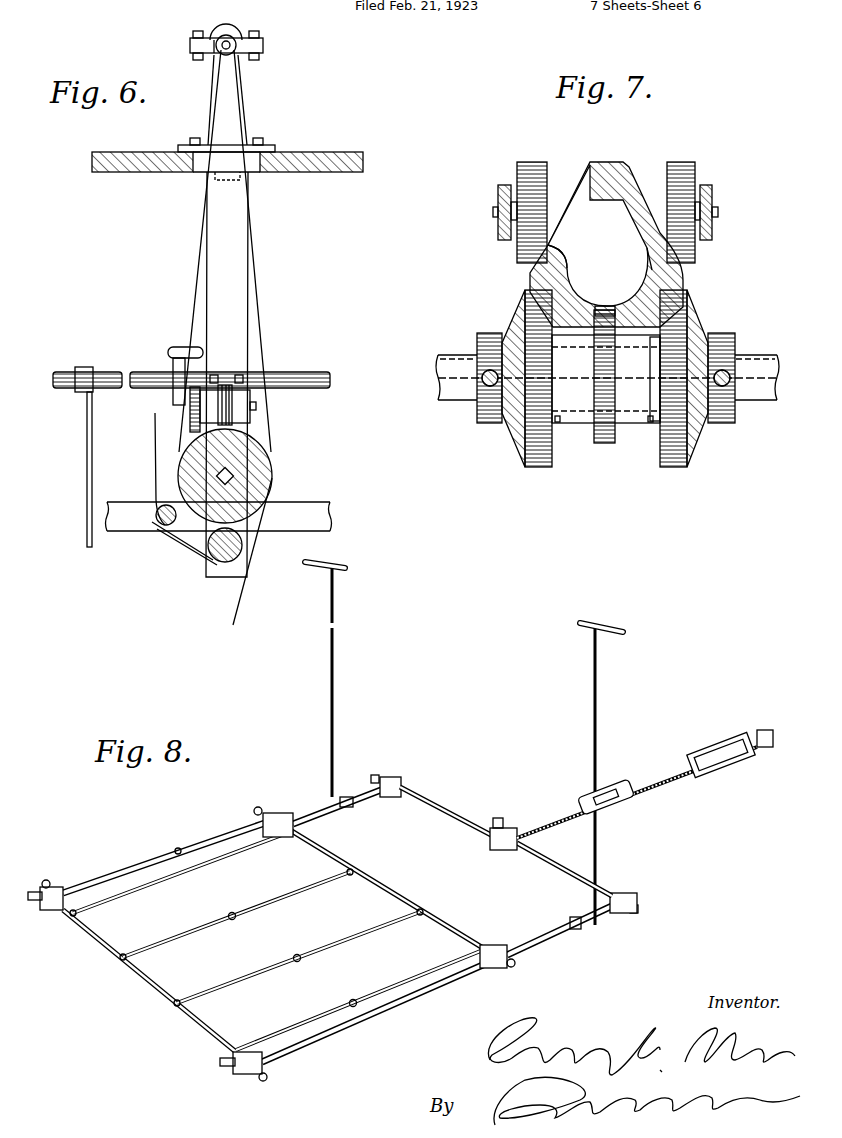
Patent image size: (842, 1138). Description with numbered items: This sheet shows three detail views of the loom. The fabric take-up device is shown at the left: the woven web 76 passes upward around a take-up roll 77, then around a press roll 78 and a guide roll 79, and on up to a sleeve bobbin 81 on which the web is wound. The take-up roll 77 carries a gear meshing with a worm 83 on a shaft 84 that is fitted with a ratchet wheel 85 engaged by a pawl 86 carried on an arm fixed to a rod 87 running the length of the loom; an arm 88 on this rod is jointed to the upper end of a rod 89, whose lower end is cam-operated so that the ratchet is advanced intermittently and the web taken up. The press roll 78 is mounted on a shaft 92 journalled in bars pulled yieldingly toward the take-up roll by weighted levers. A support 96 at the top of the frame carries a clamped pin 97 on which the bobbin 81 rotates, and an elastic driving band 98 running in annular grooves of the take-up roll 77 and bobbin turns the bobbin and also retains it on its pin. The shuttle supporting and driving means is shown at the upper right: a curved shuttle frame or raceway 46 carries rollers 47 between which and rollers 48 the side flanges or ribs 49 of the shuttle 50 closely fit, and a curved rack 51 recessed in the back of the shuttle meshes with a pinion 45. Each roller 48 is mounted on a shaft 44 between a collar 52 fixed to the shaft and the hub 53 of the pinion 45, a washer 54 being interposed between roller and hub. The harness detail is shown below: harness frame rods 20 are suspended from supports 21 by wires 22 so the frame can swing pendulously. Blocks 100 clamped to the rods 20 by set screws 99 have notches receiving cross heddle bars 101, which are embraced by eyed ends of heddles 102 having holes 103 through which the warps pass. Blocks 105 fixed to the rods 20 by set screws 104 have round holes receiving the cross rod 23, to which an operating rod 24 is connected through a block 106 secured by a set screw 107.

In FIG. 8, the harness frame rod 20 is at (185, 850).
In FIG. 8, the support 21 is at (346, 567).
In FIG. 8, the wire 22 is at (334, 676).
In FIG. 8, the cross rod 23 is at (557, 860).
In FIG. 8, the operating rod 24 is at (662, 777).
In FIG. 7, the shaft 44 is at (450, 368).
In FIG. 7, the pinion 45 is at (605, 440).
In FIG. 7, the shuttle frame or raceway 46 is at (498, 228).
In FIG. 7, the roller 47 is at (527, 165).
In FIG. 7, the roller 48 is at (520, 320).
In FIG. 7, the side flange or rib 49 is at (540, 274).
In FIG. 7, the shuttle 50 is at (605, 170).
In FIG. 7, the curved rack 51 is at (607, 304).
In FIG. 7, the collar 52 is at (478, 415).
In FIG. 7, the hub 53 is at (633, 420).
In FIG. 7, the washer 54 is at (558, 423).
In FIG. 6, the woven web 76 is at (154, 463).
In FIG. 6, the take-up roll 77 is at (258, 470).
In FIG. 6, the press roll 78 is at (242, 545).
In FIG. 6, the guide roll 79 is at (161, 524).
In FIG. 6, the sleeve bobbin 81 is at (237, 52).
In FIG. 6, the worm 83 is at (232, 398).
In FIG. 6, the shaft 84 is at (256, 408).
In FIG. 6, the ratchet wheel 85 is at (190, 418).
In FIG. 6, the pawl 86 is at (186, 366).
In FIG. 6, the rod 87 is at (311, 374).
In FIG. 6, the arm 88 is at (83, 367).
In FIG. 6, the rod 89 is at (88, 535).
In FIG. 6, the shaft 92 is at (212, 560).
In FIG. 6, the support 96 is at (225, 116).
In FIG. 6, the pin 97 is at (211, 54).
In FIG. 6, the elastic driving band 98 is at (256, 288).
In FIG. 8, the set screw 99 is at (257, 808).
In FIG. 8, the block 100 is at (295, 797).
In FIG. 8, the cross heddle bar 101 is at (160, 993).
In FIG. 8, the heddle 102 is at (275, 898).
In FIG. 8, the hole 103 is at (232, 913).
In FIG. 8, the set screw 104 is at (375, 775).
In FIG. 8, the block 105 is at (401, 781).
In FIG. 8, the block 106 is at (510, 830).
In FIG. 8, the set screw 107 is at (515, 805).